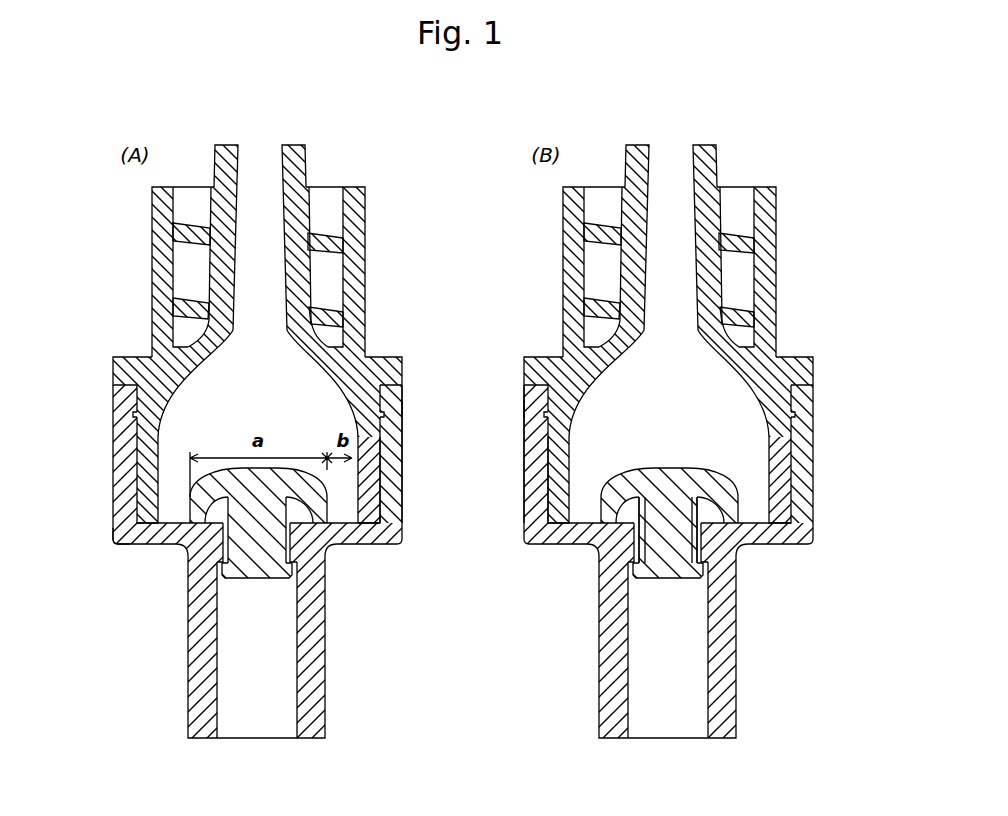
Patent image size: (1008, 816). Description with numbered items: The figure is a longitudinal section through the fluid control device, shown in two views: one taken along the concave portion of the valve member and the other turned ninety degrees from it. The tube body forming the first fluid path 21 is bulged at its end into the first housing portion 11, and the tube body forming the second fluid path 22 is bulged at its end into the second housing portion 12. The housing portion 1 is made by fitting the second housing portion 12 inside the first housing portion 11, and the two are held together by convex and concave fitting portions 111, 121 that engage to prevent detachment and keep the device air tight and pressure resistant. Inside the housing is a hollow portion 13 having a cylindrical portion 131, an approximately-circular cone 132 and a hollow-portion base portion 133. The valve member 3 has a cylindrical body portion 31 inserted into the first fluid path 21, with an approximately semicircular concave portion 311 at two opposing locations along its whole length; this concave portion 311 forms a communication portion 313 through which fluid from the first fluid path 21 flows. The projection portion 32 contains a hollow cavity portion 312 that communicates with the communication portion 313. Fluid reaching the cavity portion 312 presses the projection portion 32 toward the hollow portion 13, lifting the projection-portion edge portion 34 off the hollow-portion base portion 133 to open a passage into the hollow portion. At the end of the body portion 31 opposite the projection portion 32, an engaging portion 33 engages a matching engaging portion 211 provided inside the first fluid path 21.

The housing portion 1 is at (506, 521).
The first housing portion 11 is at (524, 413).
The fitting portion 111 is at (538, 433).
The second housing portion 12 is at (547, 357).
The fitting portion 121 is at (524, 407).
The hollow portion 13 is at (670, 425).
The cylindrical portion 131 is at (185, 445).
The approximately-circular cone 132 is at (207, 375).
The hollow-portion base portion 133 is at (596, 523).
The first fluid path 21 is at (672, 680).
The engaging portion 211 is at (633, 562).
The second fluid path 22 is at (672, 213).
The valve member 3 is at (700, 546).
The body portion 31 is at (222, 563).
The concave portion 311 is at (670, 538).
The cavity portion 312 is at (707, 514).
The communication portion 313 is at (700, 532).
The projection portion 32 is at (197, 483).
The engaging portion 33 is at (225, 580).
The projection-portion edge portion 34 is at (113, 542).